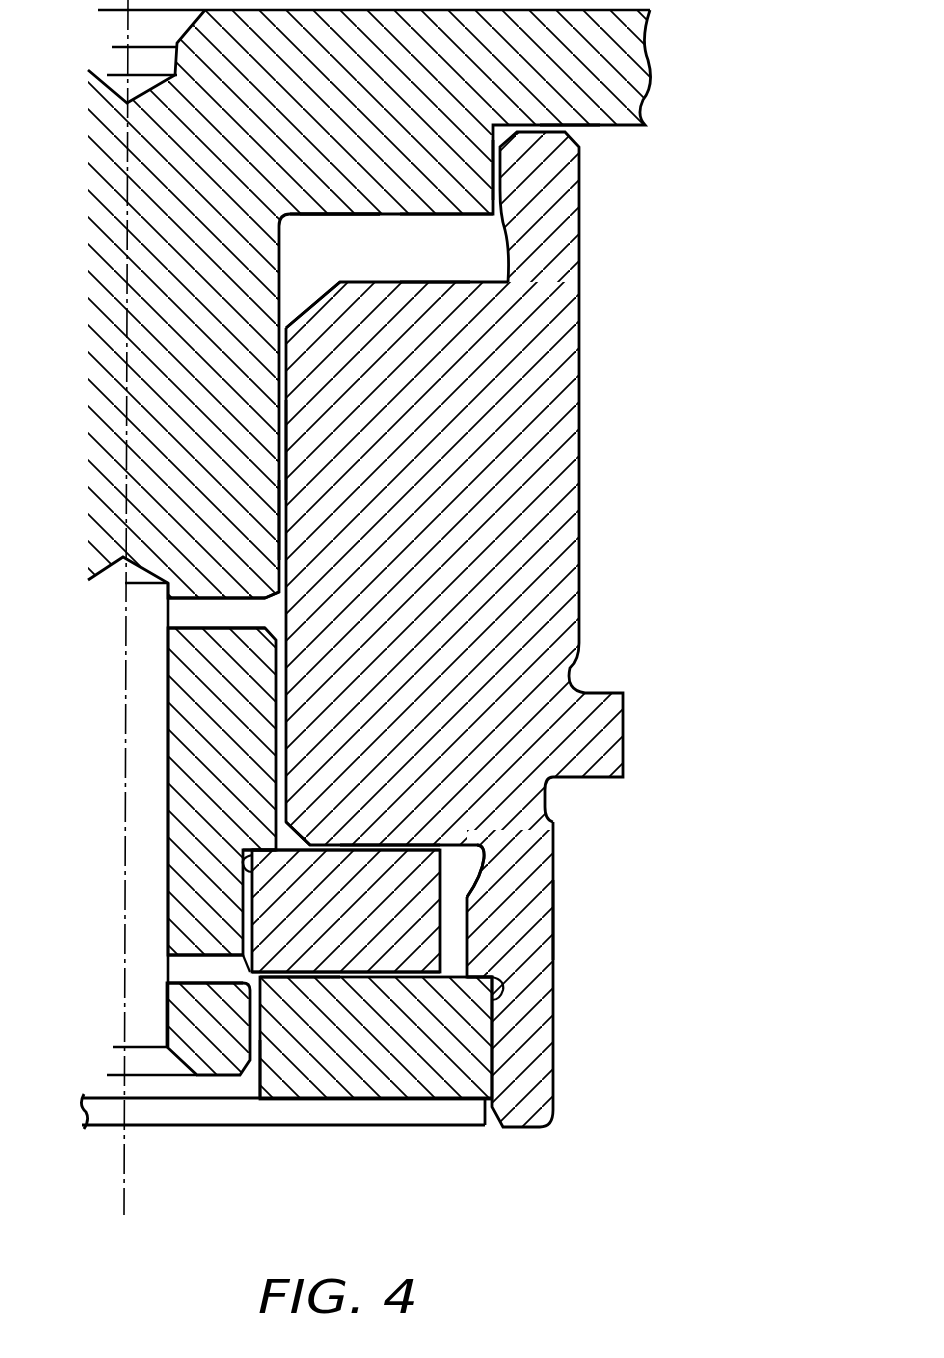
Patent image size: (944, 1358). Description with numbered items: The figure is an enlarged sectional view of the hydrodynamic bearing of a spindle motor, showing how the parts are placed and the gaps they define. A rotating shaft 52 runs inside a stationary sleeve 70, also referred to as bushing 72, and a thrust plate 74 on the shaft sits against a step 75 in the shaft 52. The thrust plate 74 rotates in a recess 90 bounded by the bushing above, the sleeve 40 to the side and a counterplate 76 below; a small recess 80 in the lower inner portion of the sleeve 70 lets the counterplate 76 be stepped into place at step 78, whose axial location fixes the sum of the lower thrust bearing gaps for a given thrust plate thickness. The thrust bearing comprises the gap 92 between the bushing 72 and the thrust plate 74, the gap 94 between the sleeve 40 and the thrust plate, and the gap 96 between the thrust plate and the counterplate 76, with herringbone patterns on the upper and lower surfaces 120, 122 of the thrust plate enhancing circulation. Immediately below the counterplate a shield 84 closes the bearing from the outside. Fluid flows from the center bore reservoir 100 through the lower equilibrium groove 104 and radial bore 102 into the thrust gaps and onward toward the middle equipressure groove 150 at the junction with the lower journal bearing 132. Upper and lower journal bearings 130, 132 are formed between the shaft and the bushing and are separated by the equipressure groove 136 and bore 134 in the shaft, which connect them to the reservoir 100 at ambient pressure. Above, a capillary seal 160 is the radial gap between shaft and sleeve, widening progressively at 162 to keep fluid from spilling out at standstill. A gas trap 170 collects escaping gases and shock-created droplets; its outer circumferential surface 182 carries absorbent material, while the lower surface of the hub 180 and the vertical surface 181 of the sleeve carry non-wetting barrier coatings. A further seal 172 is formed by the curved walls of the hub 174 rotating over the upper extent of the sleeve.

The sleeve 40 is at (528, 906).
The rotating shaft 52 is at (218, 471).
The stationary sleeve 70 is at (479, 629).
The bushing 72 is at (297, 447).
The thrust plate 74 is at (355, 930).
The step 75 is at (255, 843).
The counterplate 76 is at (388, 1061).
The step 78 is at (505, 973).
The recess 80 is at (502, 985).
The shield 84 is at (168, 1104).
The recess 90 is at (460, 865).
The gap 92 is at (386, 843).
The gap 94 is at (553, 920).
The gap 96 is at (295, 978).
The reservoir 100 is at (143, 973).
The radial bore 102 is at (183, 975).
The lower equilibrium groove 104 is at (262, 1100).
The upper surface of thrust plate 120 is at (346, 870).
The lower surface of thrust plate 122 is at (346, 954).
The upper journal bearing 130 is at (278, 515).
The lower journal bearing 132 is at (272, 663).
The radial bore 134 is at (195, 612).
The equipressure groove 136 is at (287, 615).
The middle equipressure groove 150 is at (290, 835).
The capillary seal 160 is at (352, 263).
The progressively increasing gap width 162 is at (303, 313).
The gas trap 170 is at (477, 263).
The seal 172 is at (492, 167).
The hub 174 is at (547, 118).
The lower surface of hub 180 is at (343, 172).
The vertical surface of stationary sleeve 181 is at (433, 287).
The outer circumferential surface of gas trap 182 is at (510, 243).